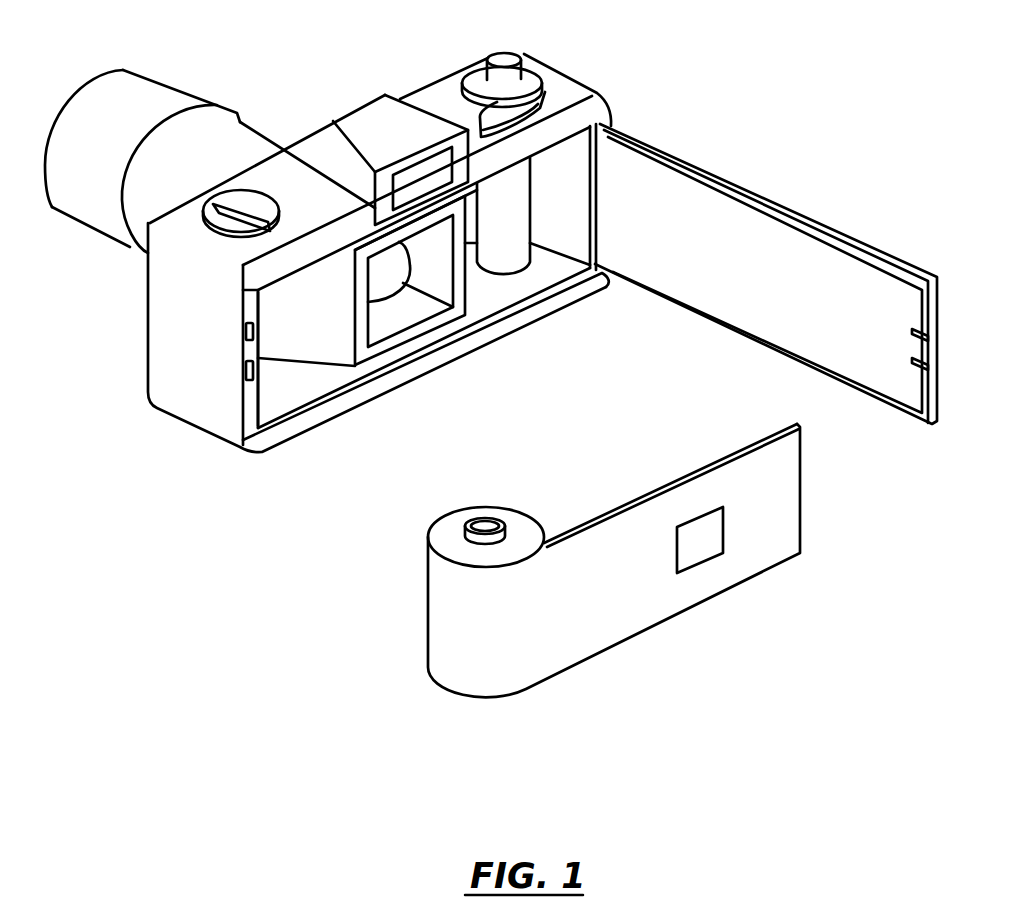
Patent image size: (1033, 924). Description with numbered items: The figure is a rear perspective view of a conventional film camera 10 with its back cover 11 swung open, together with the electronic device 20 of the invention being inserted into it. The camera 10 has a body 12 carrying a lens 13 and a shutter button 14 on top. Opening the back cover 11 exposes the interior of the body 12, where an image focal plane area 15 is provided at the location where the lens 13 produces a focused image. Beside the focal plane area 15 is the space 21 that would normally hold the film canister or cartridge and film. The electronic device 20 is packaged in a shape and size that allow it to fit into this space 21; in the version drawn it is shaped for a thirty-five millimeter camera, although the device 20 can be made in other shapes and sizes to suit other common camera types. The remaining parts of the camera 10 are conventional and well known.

The camera 10 is at (491, 274).
The back cover 11 is at (768, 198).
The body 12 is at (170, 318).
The lens 13 is at (157, 93).
The shutter button 14 is at (508, 58).
The image focal plane area 15 is at (423, 327).
The electronic device 20 is at (457, 648).
The space 21 is at (287, 385).